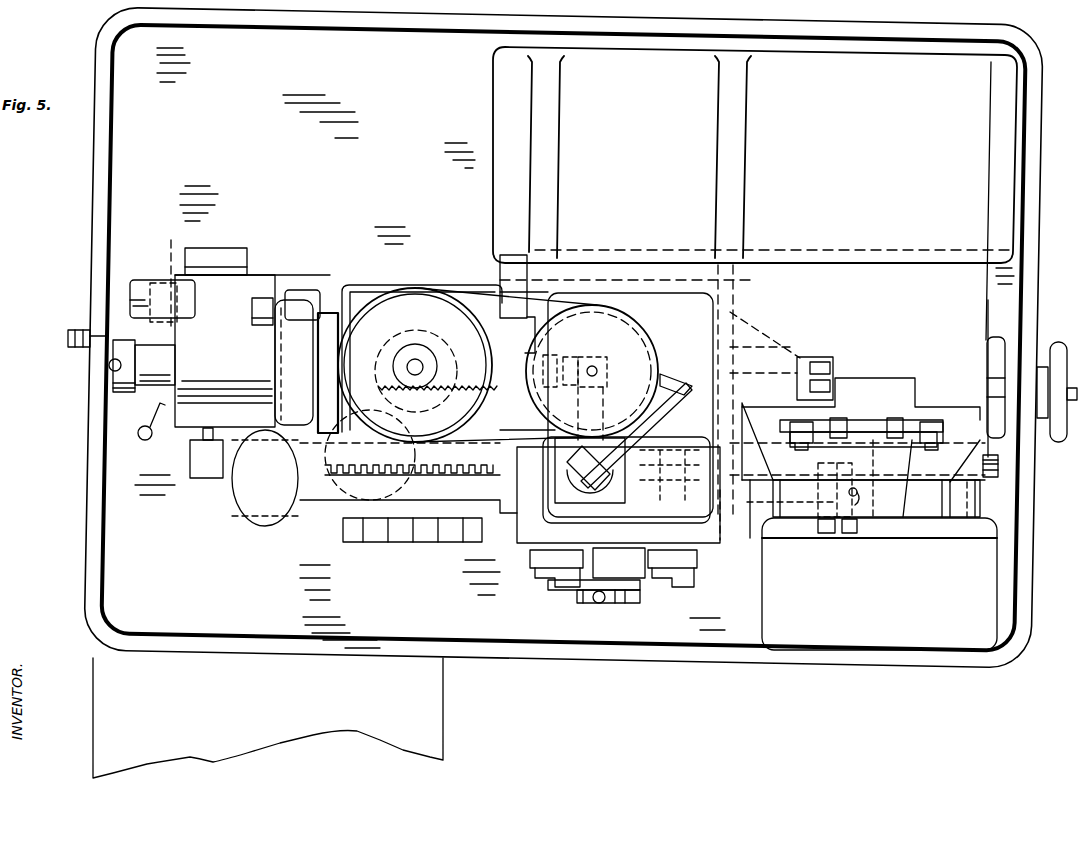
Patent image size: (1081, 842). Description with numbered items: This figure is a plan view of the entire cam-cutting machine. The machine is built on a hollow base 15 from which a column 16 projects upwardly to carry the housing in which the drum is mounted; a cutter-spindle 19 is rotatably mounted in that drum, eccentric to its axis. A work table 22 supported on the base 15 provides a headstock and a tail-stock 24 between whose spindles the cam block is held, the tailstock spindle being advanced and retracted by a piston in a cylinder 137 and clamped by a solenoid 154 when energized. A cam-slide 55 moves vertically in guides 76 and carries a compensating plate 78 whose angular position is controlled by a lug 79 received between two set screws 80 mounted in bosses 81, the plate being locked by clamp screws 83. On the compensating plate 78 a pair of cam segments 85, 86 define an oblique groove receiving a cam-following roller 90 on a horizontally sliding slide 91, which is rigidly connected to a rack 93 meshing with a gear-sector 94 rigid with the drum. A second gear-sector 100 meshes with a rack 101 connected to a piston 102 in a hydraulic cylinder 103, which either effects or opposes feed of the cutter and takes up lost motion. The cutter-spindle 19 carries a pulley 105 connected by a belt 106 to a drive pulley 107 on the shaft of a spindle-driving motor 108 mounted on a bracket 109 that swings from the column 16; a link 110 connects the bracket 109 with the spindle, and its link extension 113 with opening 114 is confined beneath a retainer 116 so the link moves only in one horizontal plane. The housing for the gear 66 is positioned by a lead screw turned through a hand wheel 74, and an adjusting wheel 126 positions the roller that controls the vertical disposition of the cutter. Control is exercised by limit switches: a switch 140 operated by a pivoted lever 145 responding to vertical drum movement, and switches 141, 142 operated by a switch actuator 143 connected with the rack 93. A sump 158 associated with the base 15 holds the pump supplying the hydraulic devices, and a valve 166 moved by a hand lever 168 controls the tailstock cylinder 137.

The hollow base 15 is at (563, 337).
The column 16 is at (532, 188).
The cutter-spindle 19 is at (417, 360).
The work table 22 is at (258, 280).
The tail-stock 24 is at (244, 351).
The cam-slide 55 is at (920, 405).
The gear 66 is at (818, 355).
The hand wheel 74 is at (1060, 343).
The guides 76 is at (975, 432).
The compensating plate 78 is at (795, 432).
The lug 79 is at (863, 422).
The set screws 80 is at (800, 420).
The bosses 81 is at (838, 418).
The clamp screws 83 is at (818, 447).
The cam segment 85 is at (815, 490).
The cam segment 86 is at (905, 500).
The cam-following roller 90 is at (870, 500).
The slide 91 is at (965, 500).
The rack 93 is at (358, 430).
The gear-sector 94 is at (436, 372).
The second gear-sector 100 is at (340, 508).
The rack 101 is at (375, 524).
The piston 102 is at (752, 530).
The hydraulic cylinder 103 is at (716, 560).
The pulley 105 is at (413, 297).
The belt 106 is at (486, 288).
The drive pulley 107 is at (643, 326).
The spindle-driving motor 108 is at (656, 360).
The bracket 109 is at (660, 418).
The link 110 is at (505, 365).
The link extension 113 is at (294, 295).
The opening 114 is at (307, 330).
The retainer 116 is at (330, 390).
The adjusting wheel 126 is at (270, 528).
The cylinder 137 is at (152, 383).
The switch 140 is at (619, 563).
The switch 141 is at (540, 560).
The switch 142 is at (662, 568).
The switch actuator 143 is at (575, 590).
The pivoted lever 145 is at (586, 605).
The solenoid 154 is at (250, 307).
The sump 158 is at (268, 718).
The valve 166 is at (145, 330).
The hand lever 168 is at (138, 436).